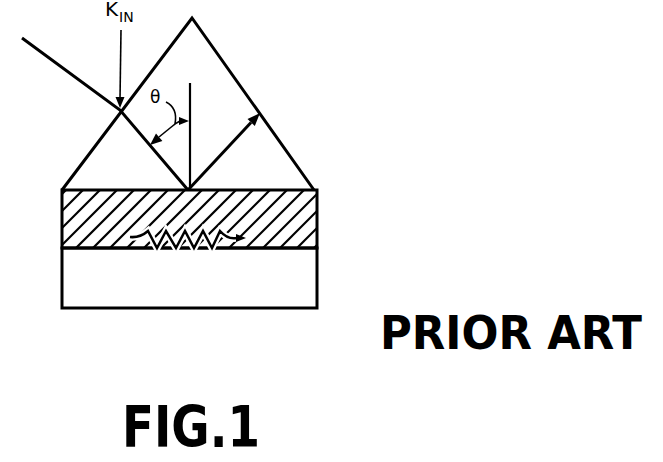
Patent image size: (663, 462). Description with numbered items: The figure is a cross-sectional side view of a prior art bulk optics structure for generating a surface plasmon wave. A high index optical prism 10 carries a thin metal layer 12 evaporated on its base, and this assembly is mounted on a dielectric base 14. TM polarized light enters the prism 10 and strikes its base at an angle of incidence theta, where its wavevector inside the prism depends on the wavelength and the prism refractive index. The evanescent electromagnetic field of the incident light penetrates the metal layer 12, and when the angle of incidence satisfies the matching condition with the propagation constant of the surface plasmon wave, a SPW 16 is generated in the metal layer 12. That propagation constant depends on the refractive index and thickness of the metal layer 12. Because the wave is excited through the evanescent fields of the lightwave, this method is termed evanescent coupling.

The high index optical prism 10 is at (245, 77).
The thin metal layer 12 is at (319, 217).
The dielectric base 14 is at (319, 272).
The SPW 16 is at (156, 248).